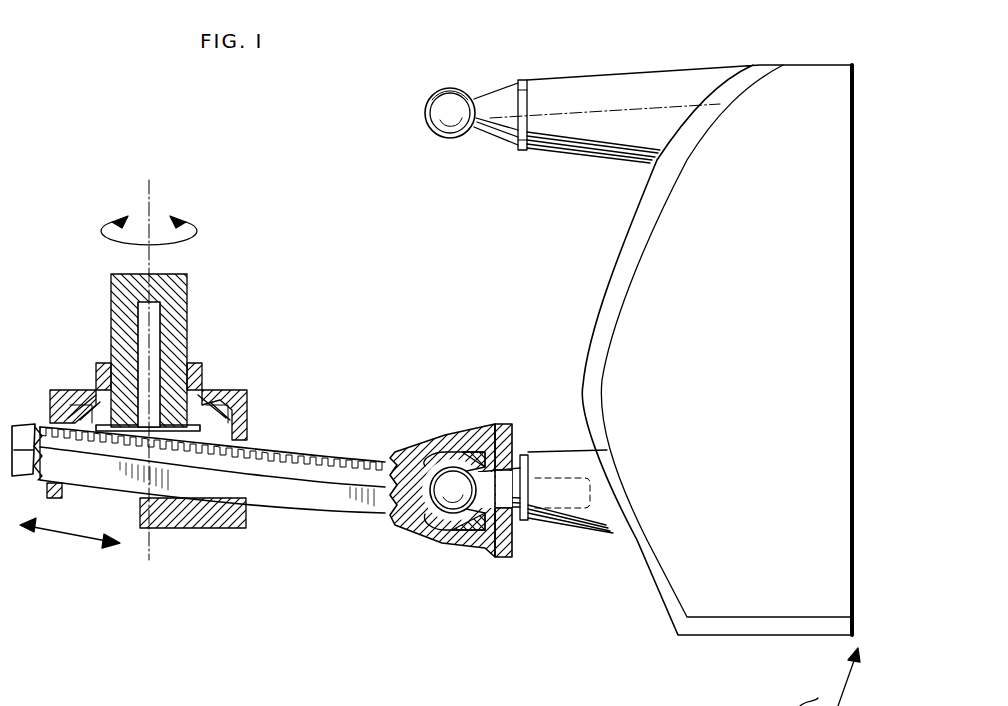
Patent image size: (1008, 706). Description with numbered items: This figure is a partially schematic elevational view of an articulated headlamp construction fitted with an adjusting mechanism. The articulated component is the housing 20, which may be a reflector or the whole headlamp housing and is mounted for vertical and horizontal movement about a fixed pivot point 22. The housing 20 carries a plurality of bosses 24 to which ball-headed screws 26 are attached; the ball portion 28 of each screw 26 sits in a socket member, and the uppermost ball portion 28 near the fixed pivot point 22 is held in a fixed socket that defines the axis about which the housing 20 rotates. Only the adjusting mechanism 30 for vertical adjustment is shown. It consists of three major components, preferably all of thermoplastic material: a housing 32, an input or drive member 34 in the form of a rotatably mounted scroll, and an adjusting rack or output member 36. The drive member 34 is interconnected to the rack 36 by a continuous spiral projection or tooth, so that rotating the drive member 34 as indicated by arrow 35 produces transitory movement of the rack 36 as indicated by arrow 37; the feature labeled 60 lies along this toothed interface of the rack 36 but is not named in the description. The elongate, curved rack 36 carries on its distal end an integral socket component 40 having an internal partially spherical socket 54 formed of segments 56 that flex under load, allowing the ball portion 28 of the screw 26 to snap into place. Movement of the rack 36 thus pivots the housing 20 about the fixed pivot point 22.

The housing 20 is at (592, 392).
The fixed pivot point 22 is at (539, 303).
The bosses 24 is at (618, 90).
The ball-headed screws 26 is at (500, 118).
The ball portion 28 is at (436, 130).
The adjusting mechanism 30 is at (213, 352).
The housing 32 is at (248, 408).
The drive member 34 is at (170, 300).
The arrow 35 is at (104, 240).
The adjusting rack 36 is at (296, 498).
The arrow 37 is at (75, 548).
The socket component 40 is at (415, 446).
The internal partially spherical socket 54 is at (470, 432).
The segments 56 is at (505, 455).
The rack teeth 60 is at (285, 452).